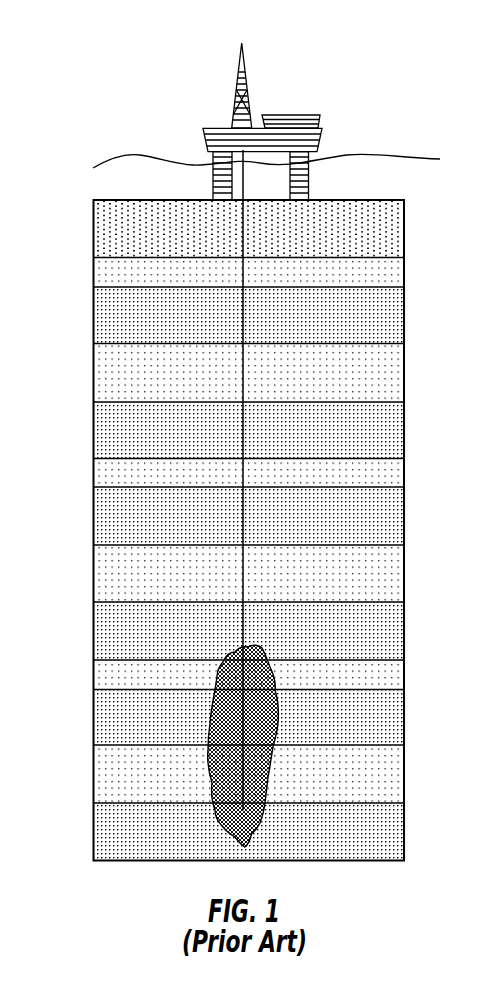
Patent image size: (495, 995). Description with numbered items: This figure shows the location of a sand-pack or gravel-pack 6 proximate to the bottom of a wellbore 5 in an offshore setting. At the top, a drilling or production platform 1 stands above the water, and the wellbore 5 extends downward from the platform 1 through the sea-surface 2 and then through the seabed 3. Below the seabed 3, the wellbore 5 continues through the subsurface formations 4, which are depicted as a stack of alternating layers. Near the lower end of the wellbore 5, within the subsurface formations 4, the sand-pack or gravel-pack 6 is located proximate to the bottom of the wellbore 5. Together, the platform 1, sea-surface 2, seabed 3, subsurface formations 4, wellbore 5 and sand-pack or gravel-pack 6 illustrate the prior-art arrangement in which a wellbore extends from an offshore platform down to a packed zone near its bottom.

The drilling or production platform 1 is at (313, 118).
The sea-surface 2 is at (94, 168).
The seabed 3 is at (400, 200).
The subsurface formations 4 is at (100, 303).
The wellbore 5 is at (243, 477).
The sand-pack or gravel-pack 6 is at (272, 698).